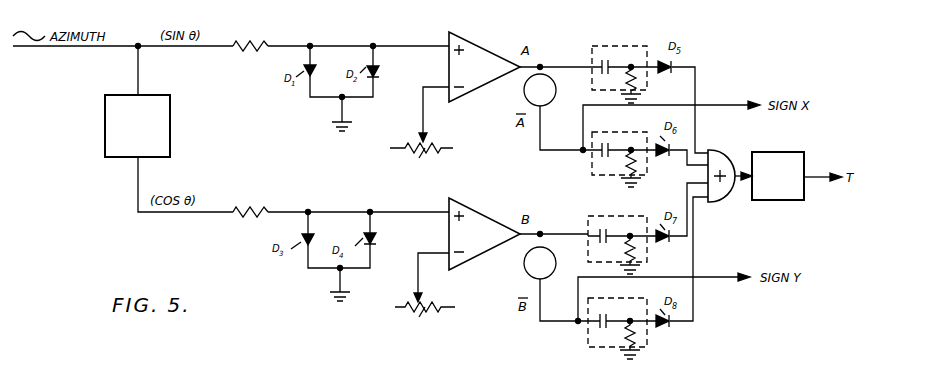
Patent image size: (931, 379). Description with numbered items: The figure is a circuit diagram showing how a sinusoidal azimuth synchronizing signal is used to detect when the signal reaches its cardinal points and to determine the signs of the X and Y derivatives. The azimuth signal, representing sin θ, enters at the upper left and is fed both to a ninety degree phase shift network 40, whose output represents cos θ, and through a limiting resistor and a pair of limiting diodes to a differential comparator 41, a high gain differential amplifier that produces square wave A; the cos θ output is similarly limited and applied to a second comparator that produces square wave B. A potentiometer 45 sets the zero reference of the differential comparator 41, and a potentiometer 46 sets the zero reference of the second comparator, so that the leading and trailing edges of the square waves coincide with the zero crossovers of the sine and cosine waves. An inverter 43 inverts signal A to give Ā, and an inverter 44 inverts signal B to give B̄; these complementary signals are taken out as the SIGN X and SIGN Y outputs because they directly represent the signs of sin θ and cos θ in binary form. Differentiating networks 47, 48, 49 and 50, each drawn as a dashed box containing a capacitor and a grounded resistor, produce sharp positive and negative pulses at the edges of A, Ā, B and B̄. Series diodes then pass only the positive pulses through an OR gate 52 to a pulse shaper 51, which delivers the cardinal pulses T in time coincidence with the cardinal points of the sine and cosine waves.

The 90° phase shift network 40 is at (170, 108).
The differential comparator 41 is at (484, 47).
The inverter 43 is at (550, 67).
The inverter 44 is at (526, 274).
The potentiometer 45 is at (426, 164).
The potentiometer 46 is at (418, 325).
The differentiating network 47 is at (635, 46).
The differentiating network 48 is at (596, 175).
The differentiating network 49 is at (618, 216).
The differentiating network 50 is at (588, 340).
The pulse shaper 51 is at (806, 157).
The OR gate 52 is at (717, 156).